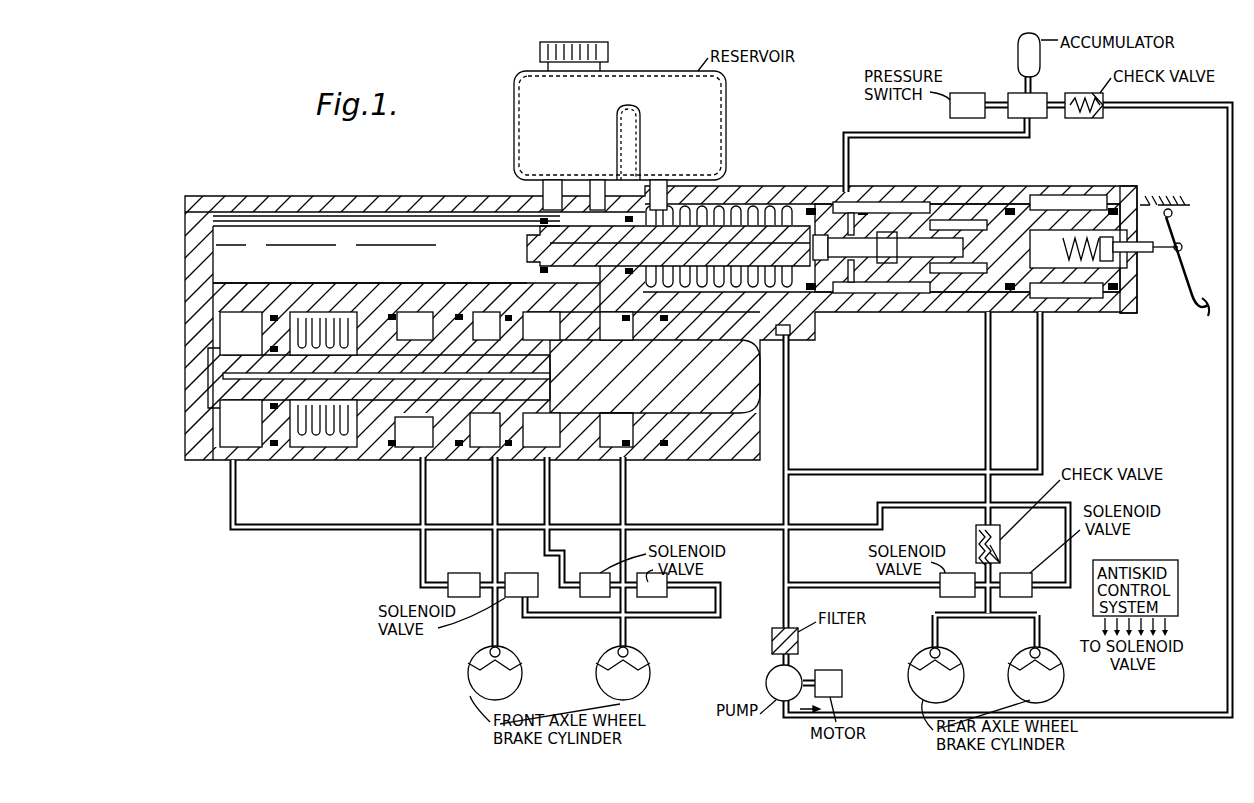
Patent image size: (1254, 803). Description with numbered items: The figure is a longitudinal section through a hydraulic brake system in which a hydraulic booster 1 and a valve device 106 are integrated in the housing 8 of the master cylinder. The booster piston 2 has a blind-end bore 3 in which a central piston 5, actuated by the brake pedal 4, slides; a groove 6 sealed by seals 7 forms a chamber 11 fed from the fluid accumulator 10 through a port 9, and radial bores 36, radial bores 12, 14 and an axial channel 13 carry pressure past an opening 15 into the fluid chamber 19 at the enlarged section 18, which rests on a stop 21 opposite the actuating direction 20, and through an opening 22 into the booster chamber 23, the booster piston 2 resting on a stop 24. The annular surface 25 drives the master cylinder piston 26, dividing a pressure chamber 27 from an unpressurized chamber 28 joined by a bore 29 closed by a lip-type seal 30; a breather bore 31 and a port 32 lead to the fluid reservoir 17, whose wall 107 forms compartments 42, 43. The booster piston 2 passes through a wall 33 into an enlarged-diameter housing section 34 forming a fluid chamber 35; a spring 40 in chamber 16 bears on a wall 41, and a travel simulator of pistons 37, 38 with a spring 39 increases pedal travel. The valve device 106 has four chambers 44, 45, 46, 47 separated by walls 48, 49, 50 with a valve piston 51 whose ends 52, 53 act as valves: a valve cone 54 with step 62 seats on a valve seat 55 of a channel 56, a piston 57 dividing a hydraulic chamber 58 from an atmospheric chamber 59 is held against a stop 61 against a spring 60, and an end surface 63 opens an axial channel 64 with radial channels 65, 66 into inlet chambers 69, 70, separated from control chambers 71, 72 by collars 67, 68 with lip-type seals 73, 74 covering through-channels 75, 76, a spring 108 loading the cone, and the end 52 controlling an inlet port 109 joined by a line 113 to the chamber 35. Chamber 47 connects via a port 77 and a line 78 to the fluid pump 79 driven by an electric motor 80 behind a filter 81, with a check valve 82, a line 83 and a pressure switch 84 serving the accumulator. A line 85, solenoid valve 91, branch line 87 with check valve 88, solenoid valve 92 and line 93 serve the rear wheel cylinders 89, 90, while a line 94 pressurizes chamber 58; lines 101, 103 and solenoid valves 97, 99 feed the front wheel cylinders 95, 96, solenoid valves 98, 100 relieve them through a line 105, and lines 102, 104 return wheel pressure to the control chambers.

The hydraulic booster 1 is at (893, 380).
The booster piston 2 is at (905, 200).
The blind-end bore 3 is at (812, 292).
The brake pedal 4 is at (1207, 318).
The central piston 5 is at (940, 292).
The groove 6 is at (905, 292).
The seals 7 is at (808, 200).
The housing 8 is at (880, 200).
The port 9 is at (840, 195).
The fluid accumulator 10 is at (1020, 40).
The chamber 11 is at (925, 215).
The radial bore 12 is at (880, 292).
The axial channel 13 is at (920, 292).
The radial bore 14 is at (958, 212).
The opening 15 is at (785, 205).
The chamber 16 is at (710, 208).
The fluid reservoir 17 is at (648, 71).
The enlarged section 18 is at (1030, 210).
The fluid chamber 19 is at (933, 205).
The actuating direction 20 is at (1225, 247).
The stop 21 is at (1060, 200).
The opening 22 is at (995, 200).
The booster chamber 23 is at (1010, 212).
The stop 24 is at (958, 292).
The annular surface 25 is at (975, 292).
The master cylinder piston 26 is at (540, 240).
The pressure chamber 27 is at (243, 228).
The unpressurized chamber 28 is at (660, 178).
The bore 29 is at (552, 180).
The lip-type seal 30 is at (535, 212).
The breather bore 31 is at (545, 200).
The port 32 is at (598, 178).
The wall 33 is at (1005, 312).
The enlarged-diameter housing section 34 is at (1090, 200).
The fluid chamber 35 is at (1128, 195).
The radial bores 36 is at (852, 205).
The piston 37 is at (1070, 270).
The piston 38 is at (1118, 270).
The spring 39 is at (1105, 262).
The spring 40 is at (760, 200).
The wall 41 is at (666, 195).
The compartment 42 is at (540, 135).
The compartment 43 is at (700, 100).
The chamber 44 is at (312, 447).
The chamber 45 is at (478, 447).
The chamber 46 is at (606, 447).
The chamber 47 is at (760, 420).
The wall 48 is at (690, 460).
The wall 49 is at (535, 447).
The wall 50 is at (372, 450).
The valve piston 51 is at (700, 385).
The end 52 is at (776, 335).
The end 53 is at (210, 395).
The valve cone 54 is at (210, 455).
The valve seat 55 is at (210, 440).
The channel 56 is at (200, 295).
The piston 57 is at (270, 450).
The hydraulic chamber 58 is at (226, 465).
The chamber 59 is at (345, 450).
The spring 60 is at (312, 318).
The stop 61 is at (262, 447).
The step 62 is at (240, 315).
The end surface 63 is at (208, 367).
The axial channel 64 is at (350, 312).
The radial channel 65 is at (385, 312).
The radial channel 66 is at (486, 326).
The collar 67 is at (470, 312).
The collar 68 is at (716, 325).
The inlet chamber 69 is at (405, 447).
The inlet chamber 70 is at (540, 450).
The control chamber 71 is at (480, 450).
The control chamber 72 is at (650, 318).
The lip-type seal 73 is at (412, 312).
The lip-type seal 74 is at (541, 326).
The axial through-channel 75 is at (445, 312).
The axial through-channel 76 is at (608, 312).
The port 77 is at (790, 345).
The line 78 is at (790, 450).
The fluid pump 79 is at (766, 680).
The electric motor 80 is at (843, 683).
The filter 81 is at (770, 640).
The check valve 82 is at (1092, 90).
The line 83 is at (1226, 406).
The pressure switch 84 is at (968, 93).
The line 85 is at (984, 410).
The branch line 87 is at (1000, 520).
The check valve 88 is at (976, 530).
The wheel cylinder 89 is at (925, 652).
The wheel cylinder 90 is at (1026, 650).
The solenoid valve 91 is at (1032, 595).
The solenoid valve 92 is at (940, 595).
The line 93 is at (845, 578).
The line 94 is at (348, 532).
The wheel cylinder 95 is at (468, 660).
The wheel cylinder 96 is at (650, 657).
The solenoid valve 97 is at (462, 572).
The solenoid valve 98 is at (524, 600).
The solenoid valve 99 is at (592, 600).
The solenoid valve 100 is at (660, 600).
The line 101 is at (420, 572).
The line 102 is at (498, 565).
The line 103 is at (562, 558).
The line 104 is at (626, 545).
The line 105 is at (568, 620).
The valve device 106 is at (320, 545).
The wall 107 is at (640, 108).
The spring 108 is at (645, 460).
The inlet port 109 is at (720, 470).
The line 113 is at (878, 478).